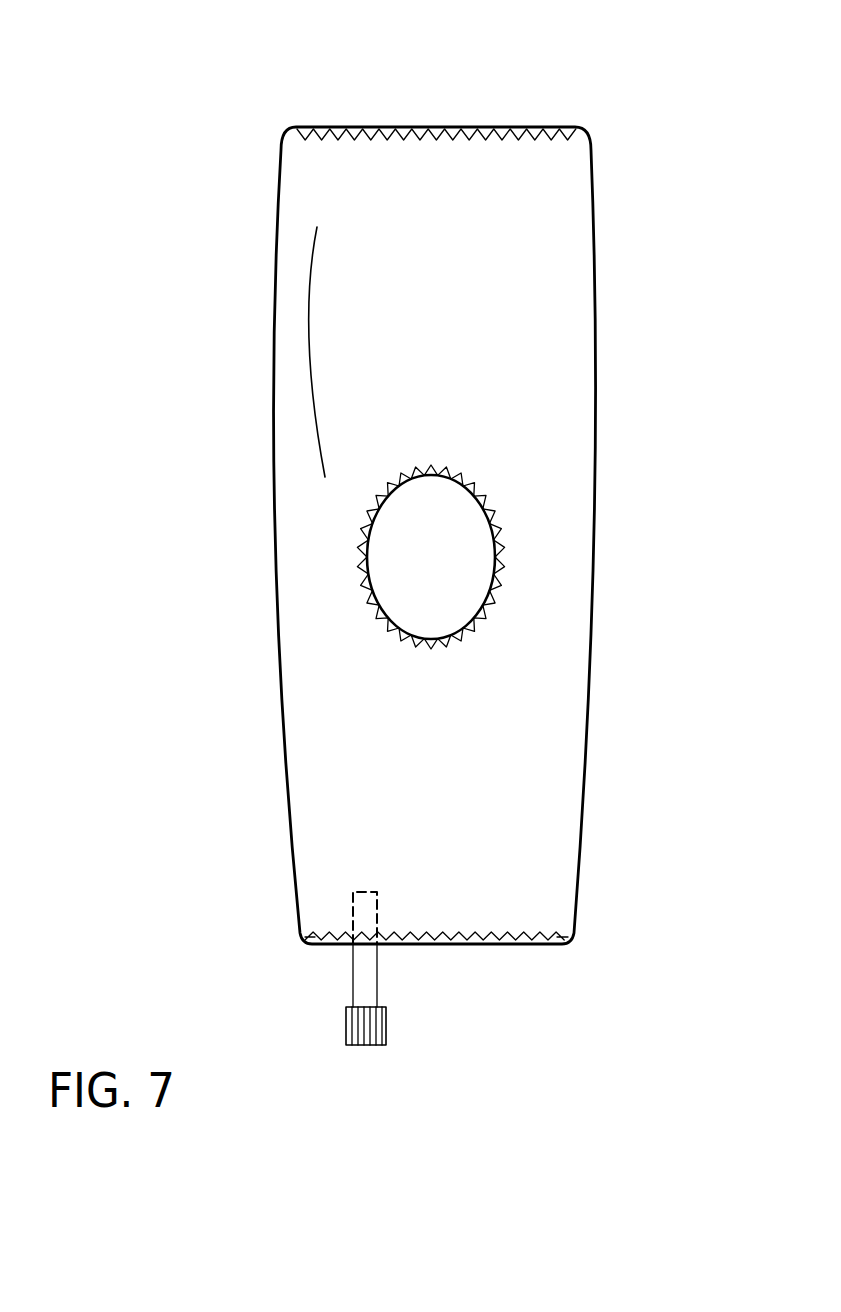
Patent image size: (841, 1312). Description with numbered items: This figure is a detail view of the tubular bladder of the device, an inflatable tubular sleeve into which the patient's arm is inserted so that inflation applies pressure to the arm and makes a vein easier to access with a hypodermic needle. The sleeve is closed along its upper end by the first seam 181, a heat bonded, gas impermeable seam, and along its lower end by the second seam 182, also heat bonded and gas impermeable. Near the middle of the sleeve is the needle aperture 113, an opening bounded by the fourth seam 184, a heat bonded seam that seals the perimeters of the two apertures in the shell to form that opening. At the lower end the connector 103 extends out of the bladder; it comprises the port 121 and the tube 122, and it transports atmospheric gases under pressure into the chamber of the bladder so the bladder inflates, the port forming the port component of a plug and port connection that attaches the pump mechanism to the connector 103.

The first seam 181 is at (453, 127).
The second seam 182 is at (477, 944).
The fourth seam 184 is at (458, 472).
The needle aperture 113 is at (445, 548).
The port 121 is at (357, 975).
The tube 122 is at (347, 1025).
The connector 103 is at (274, 1024).